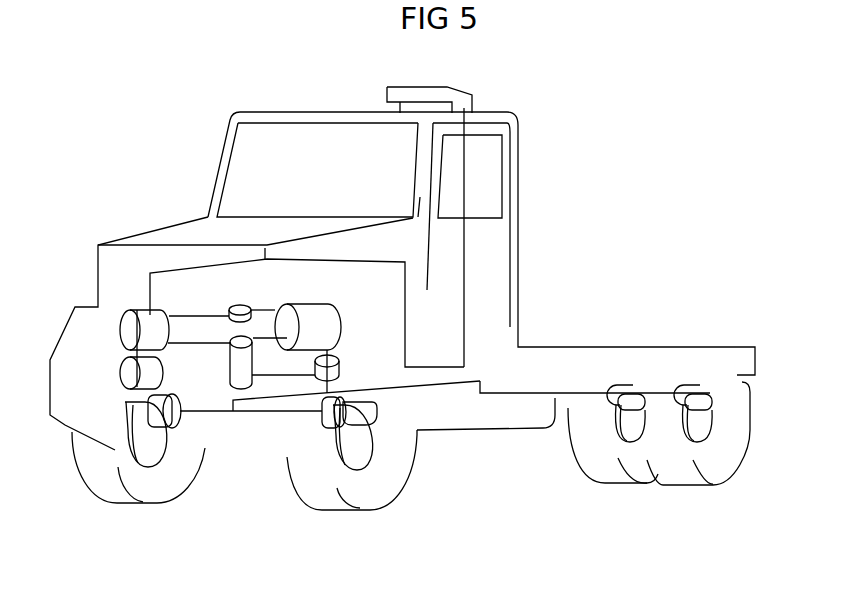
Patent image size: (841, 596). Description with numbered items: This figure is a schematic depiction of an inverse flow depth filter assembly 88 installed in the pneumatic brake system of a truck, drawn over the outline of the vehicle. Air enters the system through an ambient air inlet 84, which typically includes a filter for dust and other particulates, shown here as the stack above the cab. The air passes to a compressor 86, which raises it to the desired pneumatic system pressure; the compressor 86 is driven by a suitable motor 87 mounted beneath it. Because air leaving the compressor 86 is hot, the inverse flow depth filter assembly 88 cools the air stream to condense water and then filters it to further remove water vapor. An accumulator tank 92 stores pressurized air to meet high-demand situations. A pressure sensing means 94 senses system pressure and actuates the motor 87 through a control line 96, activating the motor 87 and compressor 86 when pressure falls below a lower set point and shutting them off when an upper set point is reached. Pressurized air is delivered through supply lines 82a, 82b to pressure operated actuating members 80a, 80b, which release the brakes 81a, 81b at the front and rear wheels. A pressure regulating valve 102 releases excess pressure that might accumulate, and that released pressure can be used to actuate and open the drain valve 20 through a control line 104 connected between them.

The ambient air inlet 84 is at (417, 84).
The compressor 86 is at (132, 323).
The motor 87 is at (132, 378).
The control line 96 is at (213, 315).
The pressure sensing means 94 is at (241, 309).
The accumulator tank 92 is at (330, 327).
The inverse flow depth filter assembly 88 is at (240, 367).
The control line 104 is at (305, 375).
The pressure regulating valve 102 is at (340, 368).
The drain valve 20 is at (229, 385).
The supply line 82a is at (266, 412).
The pressure operated actuating member 80a is at (332, 413).
The brake 81a is at (362, 410).
The supply line 82b is at (580, 392).
The pressure operated actuating member 80b is at (682, 392).
The brake 81b is at (700, 400).